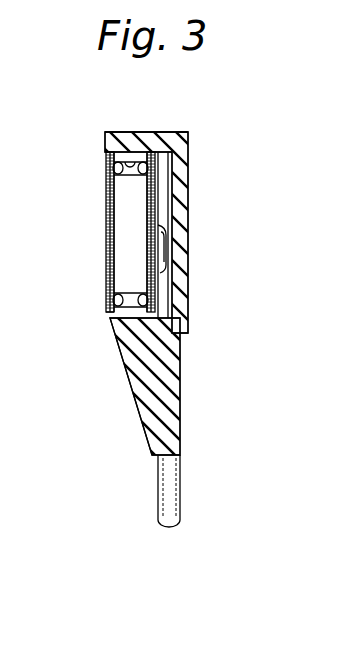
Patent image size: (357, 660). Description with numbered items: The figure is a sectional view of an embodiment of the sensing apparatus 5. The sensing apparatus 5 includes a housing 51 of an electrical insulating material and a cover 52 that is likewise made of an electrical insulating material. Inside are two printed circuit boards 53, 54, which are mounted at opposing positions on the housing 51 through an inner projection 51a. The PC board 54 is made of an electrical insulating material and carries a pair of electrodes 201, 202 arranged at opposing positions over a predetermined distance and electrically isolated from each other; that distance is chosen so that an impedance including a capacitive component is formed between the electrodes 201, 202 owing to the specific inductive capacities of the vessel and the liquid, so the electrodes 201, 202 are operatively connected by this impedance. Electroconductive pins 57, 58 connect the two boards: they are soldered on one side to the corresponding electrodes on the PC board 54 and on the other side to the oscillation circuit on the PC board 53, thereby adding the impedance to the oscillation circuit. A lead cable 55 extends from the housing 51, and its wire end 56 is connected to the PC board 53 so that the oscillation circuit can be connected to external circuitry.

The sensing apparatus 5 is at (207, 122).
The housing 51 is at (130, 393).
The inner projection 51a is at (138, 132).
The cover 52 is at (187, 293).
The printed circuit board 53 is at (156, 208).
The printed circuit board 54 is at (106, 227).
The lead cable 55 is at (181, 490).
The wire end 56 is at (168, 248).
The pin 57 is at (114, 172).
The pin 58 is at (114, 308).
The electrode 201 is at (106, 166).
The electrode 202 is at (106, 283).